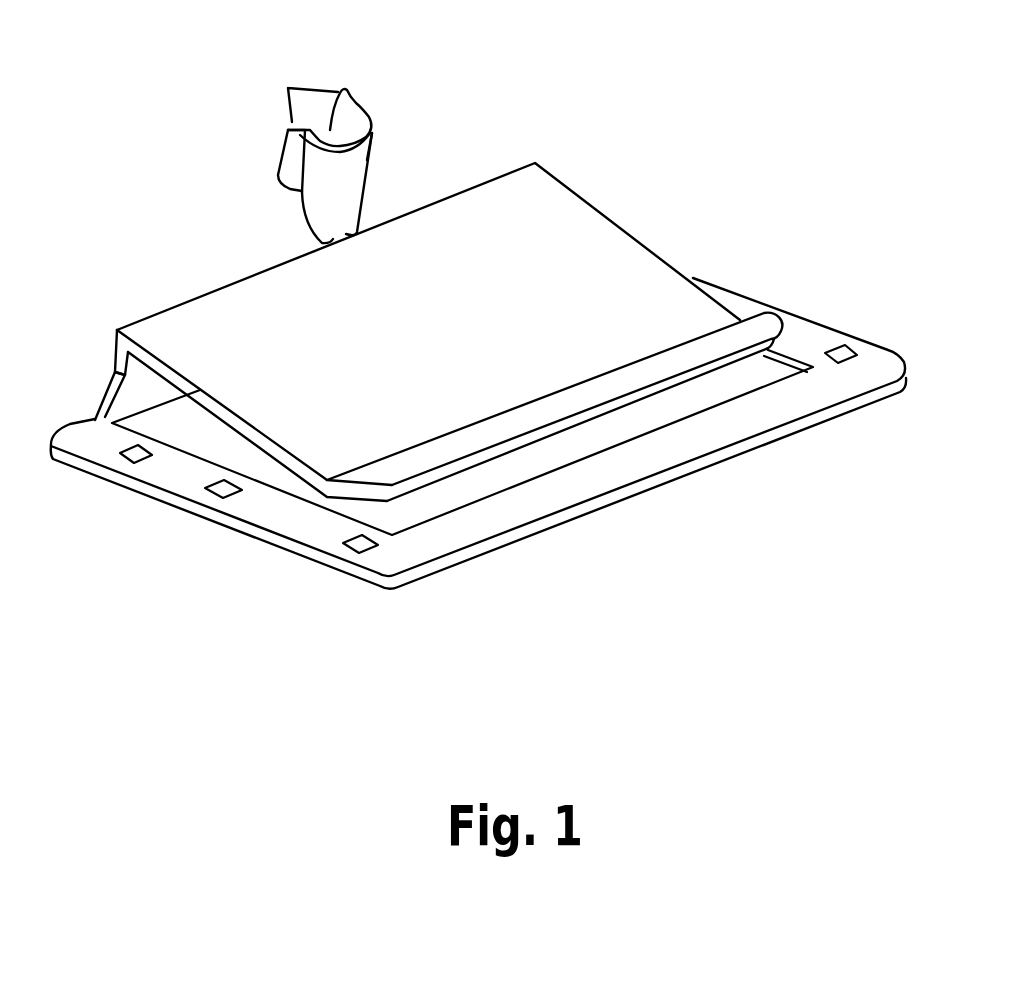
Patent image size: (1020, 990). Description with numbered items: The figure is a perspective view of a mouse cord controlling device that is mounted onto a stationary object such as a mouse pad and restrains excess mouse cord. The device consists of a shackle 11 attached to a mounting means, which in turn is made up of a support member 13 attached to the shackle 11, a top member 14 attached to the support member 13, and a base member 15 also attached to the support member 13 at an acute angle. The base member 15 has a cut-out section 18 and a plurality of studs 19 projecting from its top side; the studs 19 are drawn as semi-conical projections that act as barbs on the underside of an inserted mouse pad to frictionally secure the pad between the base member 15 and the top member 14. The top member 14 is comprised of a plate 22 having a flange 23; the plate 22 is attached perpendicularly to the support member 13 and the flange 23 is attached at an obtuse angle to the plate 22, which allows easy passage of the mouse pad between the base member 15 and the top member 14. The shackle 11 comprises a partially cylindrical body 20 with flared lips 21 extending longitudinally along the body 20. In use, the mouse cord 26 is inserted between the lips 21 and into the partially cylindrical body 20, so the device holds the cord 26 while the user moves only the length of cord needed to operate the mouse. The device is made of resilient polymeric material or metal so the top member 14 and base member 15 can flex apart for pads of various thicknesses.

The shackle 11 is at (351, 135).
The support member 13 is at (116, 358).
The top member 14 is at (446, 326).
The base member 15 is at (662, 483).
The cut-out section 18 is at (680, 407).
The studs 19 is at (350, 545).
The partially cylindrical body 20 is at (406, 125).
The flared lips 21 is at (297, 125).
The plate 22 is at (587, 248).
The flange 23 is at (606, 380).
The mouse cord 26 is at (407, 492).